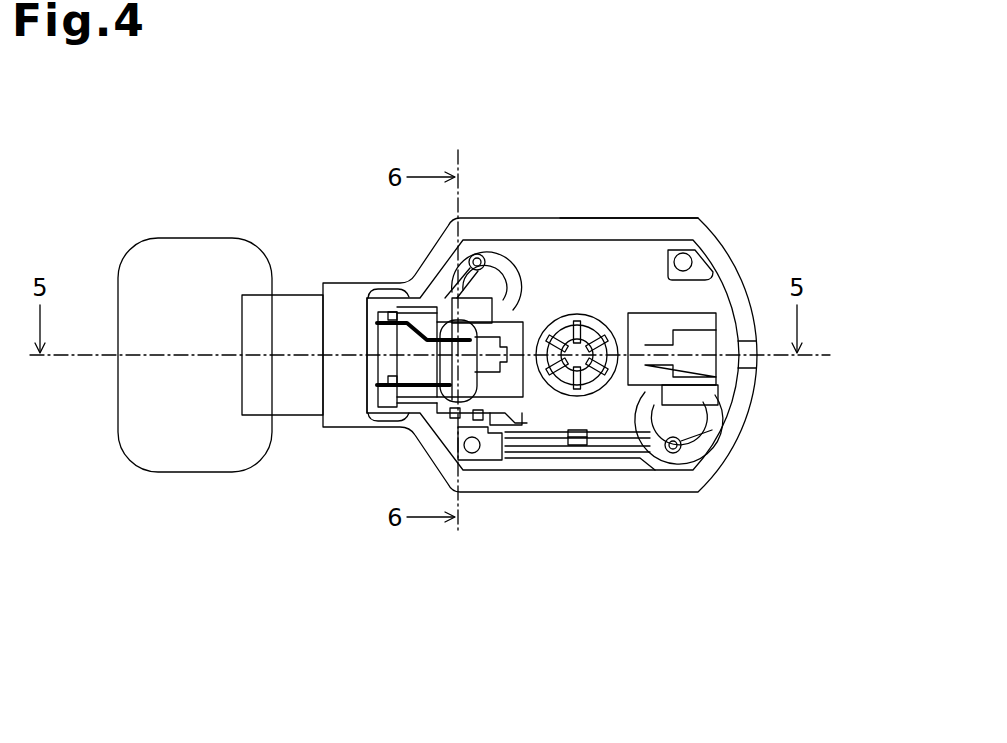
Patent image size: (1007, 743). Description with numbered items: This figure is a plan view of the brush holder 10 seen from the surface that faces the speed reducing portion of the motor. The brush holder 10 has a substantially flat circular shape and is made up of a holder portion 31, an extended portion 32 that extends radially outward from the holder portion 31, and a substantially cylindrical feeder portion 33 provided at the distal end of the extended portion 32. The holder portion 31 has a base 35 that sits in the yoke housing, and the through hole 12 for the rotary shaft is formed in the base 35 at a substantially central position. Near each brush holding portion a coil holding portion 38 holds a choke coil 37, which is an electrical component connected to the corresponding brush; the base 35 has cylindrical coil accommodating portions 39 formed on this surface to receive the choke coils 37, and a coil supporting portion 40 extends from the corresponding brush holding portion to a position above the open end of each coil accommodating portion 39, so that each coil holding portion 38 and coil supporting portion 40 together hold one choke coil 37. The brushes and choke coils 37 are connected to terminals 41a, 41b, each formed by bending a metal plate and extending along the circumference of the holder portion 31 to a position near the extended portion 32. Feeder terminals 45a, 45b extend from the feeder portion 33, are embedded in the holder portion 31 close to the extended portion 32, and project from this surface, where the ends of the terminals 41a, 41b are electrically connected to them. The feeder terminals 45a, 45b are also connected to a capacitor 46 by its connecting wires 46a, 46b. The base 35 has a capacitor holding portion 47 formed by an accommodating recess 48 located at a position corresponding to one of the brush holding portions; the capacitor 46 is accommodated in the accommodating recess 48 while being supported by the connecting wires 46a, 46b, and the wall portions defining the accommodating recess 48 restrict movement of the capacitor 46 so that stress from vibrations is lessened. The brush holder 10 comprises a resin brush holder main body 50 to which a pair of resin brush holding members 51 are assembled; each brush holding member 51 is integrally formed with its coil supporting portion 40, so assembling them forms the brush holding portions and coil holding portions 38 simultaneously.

The brush holder 10 is at (125, 146).
The through hole 12 is at (590, 316).
The holder portion 31 is at (718, 243).
The extended portion 32 is at (295, 417).
The feeder portion 33 is at (193, 473).
The base 35 is at (622, 258).
The choke coil 37 is at (500, 280).
The coil holding portion 38 is at (440, 262).
The coil accommodating portion 39 is at (494, 253).
The coil supporting portion 40 is at (482, 316).
The terminal 41a is at (375, 283).
The terminal 41b is at (636, 460).
The feeder terminal 45a is at (380, 317).
The feeder terminal 45b is at (380, 385).
The capacitor 46 is at (433, 418).
The connecting wire 46a is at (388, 318).
The connecting wire 46b is at (388, 383).
The capacitor holding portion 47 is at (402, 405).
The accommodating recess 48 is at (520, 423).
The brush holder main body 50 is at (700, 217).
The brush holding member 51 is at (519, 377).